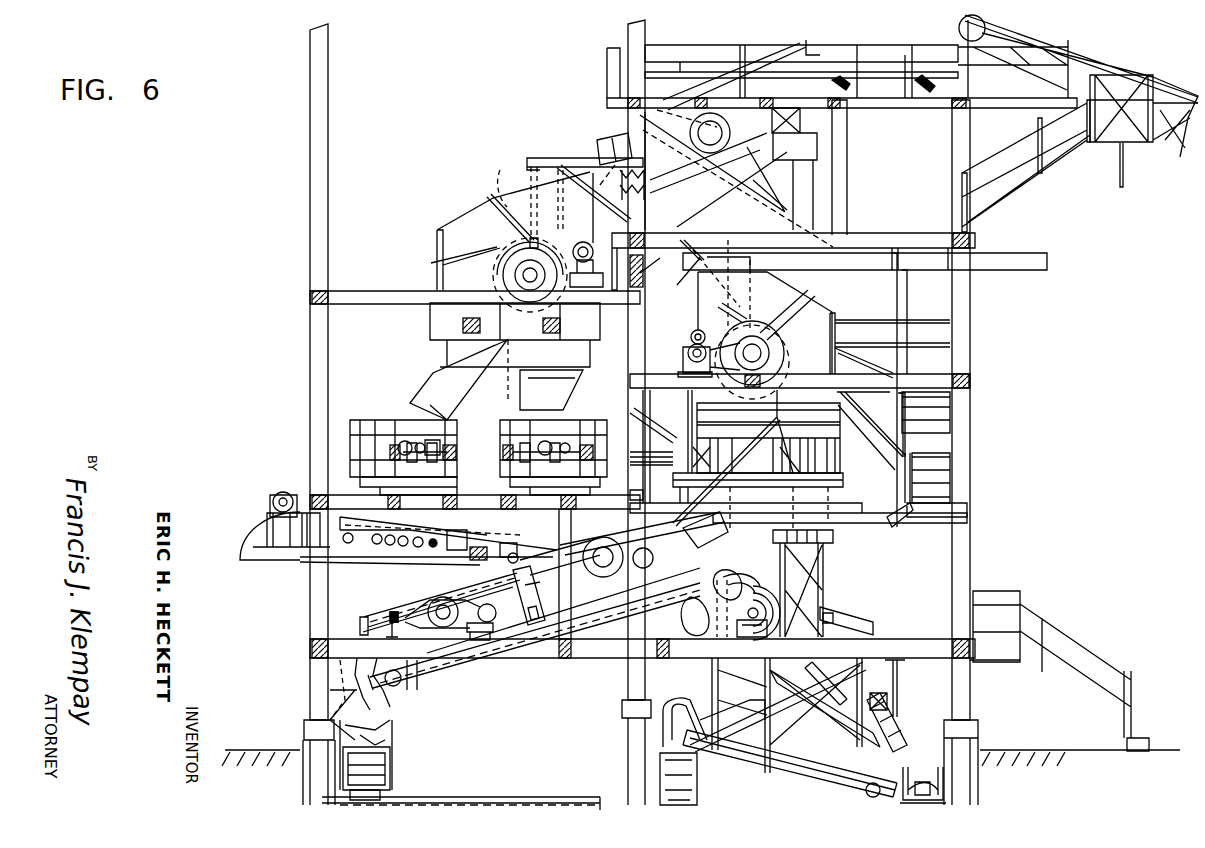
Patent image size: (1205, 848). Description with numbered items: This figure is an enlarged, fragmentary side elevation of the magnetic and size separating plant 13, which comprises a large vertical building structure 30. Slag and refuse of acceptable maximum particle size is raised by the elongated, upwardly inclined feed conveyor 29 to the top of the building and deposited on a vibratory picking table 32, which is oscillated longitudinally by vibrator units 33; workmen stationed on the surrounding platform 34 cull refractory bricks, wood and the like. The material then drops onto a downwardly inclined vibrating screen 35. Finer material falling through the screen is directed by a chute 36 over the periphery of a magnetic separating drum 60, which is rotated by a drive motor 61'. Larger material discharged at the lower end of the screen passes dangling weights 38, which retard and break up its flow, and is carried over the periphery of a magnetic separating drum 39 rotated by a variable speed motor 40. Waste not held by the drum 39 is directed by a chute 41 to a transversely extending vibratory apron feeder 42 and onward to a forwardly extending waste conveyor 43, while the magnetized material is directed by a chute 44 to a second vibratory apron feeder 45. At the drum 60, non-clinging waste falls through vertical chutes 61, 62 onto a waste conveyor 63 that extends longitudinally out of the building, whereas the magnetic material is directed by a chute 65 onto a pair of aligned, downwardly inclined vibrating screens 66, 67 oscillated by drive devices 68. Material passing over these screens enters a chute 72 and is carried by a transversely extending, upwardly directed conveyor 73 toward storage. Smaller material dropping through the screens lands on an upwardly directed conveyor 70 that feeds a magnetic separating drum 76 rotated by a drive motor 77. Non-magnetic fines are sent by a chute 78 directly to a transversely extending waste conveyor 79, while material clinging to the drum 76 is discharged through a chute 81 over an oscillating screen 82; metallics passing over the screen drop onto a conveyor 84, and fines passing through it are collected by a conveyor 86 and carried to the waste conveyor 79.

The magnetic and size separating plant 13 is at (266, 63).
The feed conveyor 29 is at (1165, 92).
The building structure 30 is at (322, 333).
The vibratory picking table 32 is at (873, 62).
The vibrator units 33 is at (855, 85).
The platform 34 is at (888, 85).
The vibrating screen 35 is at (606, 140).
The chute 36 is at (736, 307).
The dangling weights 38 is at (540, 172).
The magnetic separating drum 39 is at (500, 272).
The variable speed motor 40 is at (594, 246).
The chute 41 is at (436, 393).
The vibratory apron feeder 42 is at (412, 433).
The waste conveyor 43 is at (258, 528).
The chute 44 is at (563, 397).
The vibratory apron feeder 45 is at (518, 449).
The magnetic separating drum 60 is at (812, 303).
The vertical chute 61 is at (772, 460).
The drive motor 61' is at (694, 348).
The vertical chute 62 is at (778, 570).
The waste conveyor 63 is at (503, 550).
The chute 65 is at (693, 453).
The vibrating screen 66 is at (584, 550).
The vibrating screen 67 is at (414, 615).
The drive devices 68 is at (683, 548).
The conveyor 70 is at (540, 690).
The chute 72 is at (330, 690).
The conveyor 73 is at (390, 740).
The magnetic separating drum 76 is at (792, 588).
The drive motor 77 is at (690, 652).
The chute 78 is at (720, 693).
The waste conveyor 79 is at (622, 755).
The chute 81 is at (785, 707).
The oscillating screen 82 is at (880, 712).
The conveyor 84 is at (944, 779).
The conveyor 86 is at (780, 757).